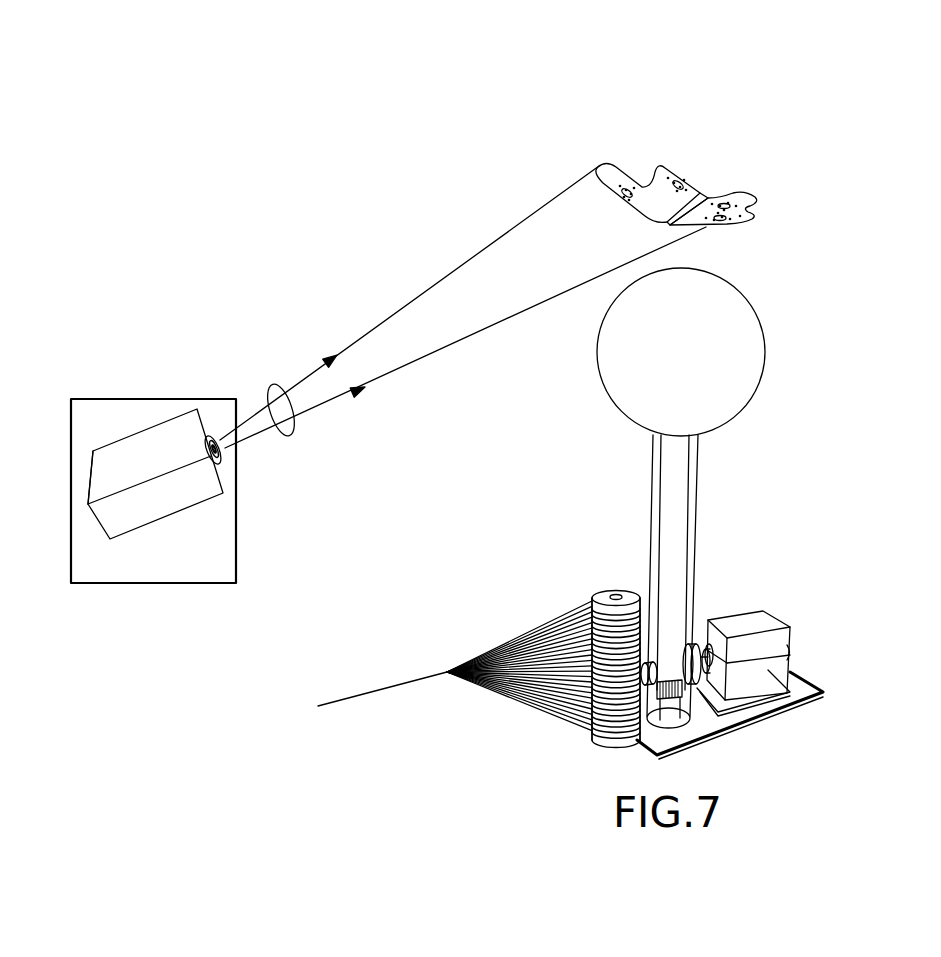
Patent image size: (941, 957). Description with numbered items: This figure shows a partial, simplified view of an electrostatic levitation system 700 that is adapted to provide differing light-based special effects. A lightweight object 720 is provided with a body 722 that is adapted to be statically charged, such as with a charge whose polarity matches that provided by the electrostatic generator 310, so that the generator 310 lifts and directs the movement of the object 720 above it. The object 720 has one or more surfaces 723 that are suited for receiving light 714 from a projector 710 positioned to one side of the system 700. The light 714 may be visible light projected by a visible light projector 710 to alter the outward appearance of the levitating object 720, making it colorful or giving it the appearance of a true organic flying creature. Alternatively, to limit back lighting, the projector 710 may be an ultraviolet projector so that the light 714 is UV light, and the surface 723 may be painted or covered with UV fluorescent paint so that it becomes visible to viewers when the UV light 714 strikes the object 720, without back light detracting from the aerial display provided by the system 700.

The electrostatic levitation system 700 is at (860, 185).
The projector 710 is at (236, 565).
The light 714 is at (291, 428).
The lightweight object 720 is at (663, 148).
The body 722 is at (720, 193).
The surface 723 is at (614, 198).
The electrostatic generator 310 is at (590, 748).